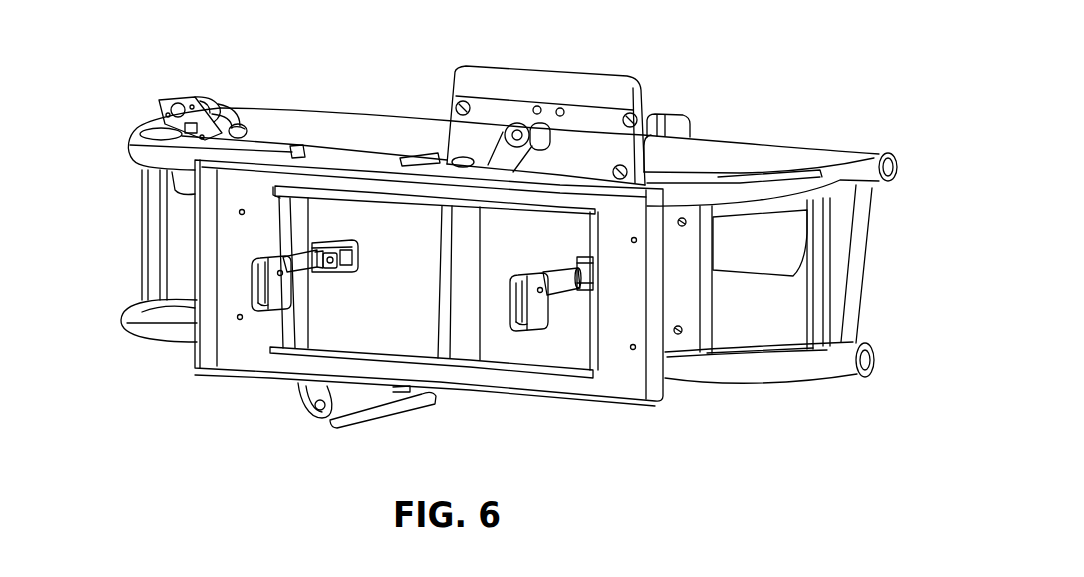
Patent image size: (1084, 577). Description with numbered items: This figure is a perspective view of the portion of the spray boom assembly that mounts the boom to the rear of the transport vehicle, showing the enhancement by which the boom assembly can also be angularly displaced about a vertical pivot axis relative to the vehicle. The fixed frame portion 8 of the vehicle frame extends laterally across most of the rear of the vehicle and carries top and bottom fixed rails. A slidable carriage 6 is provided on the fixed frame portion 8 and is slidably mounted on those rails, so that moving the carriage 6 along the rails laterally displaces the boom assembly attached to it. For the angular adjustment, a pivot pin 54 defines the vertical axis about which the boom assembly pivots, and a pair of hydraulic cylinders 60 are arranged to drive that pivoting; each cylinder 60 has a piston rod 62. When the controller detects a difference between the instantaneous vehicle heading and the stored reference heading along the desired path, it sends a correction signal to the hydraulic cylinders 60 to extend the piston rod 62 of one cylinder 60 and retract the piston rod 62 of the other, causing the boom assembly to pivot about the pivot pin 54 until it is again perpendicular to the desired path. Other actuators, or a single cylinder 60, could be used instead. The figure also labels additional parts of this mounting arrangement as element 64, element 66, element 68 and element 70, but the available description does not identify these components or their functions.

The slidable carriage 6 is at (551, 74).
The fixed frame portion 8 is at (288, 114).
The pivot pin 54 is at (477, 240).
The hydraulic cylinder 60 is at (268, 319).
The piston rod 62 is at (323, 264).
The retaining clip 64 is at (344, 245).
The panel opening 66 is at (410, 323).
The latch pin 68 is at (296, 258).
The U-shaped bracket 70 is at (250, 284).